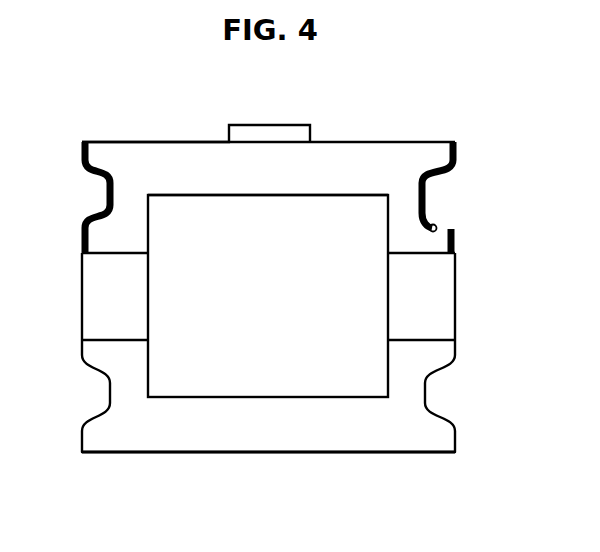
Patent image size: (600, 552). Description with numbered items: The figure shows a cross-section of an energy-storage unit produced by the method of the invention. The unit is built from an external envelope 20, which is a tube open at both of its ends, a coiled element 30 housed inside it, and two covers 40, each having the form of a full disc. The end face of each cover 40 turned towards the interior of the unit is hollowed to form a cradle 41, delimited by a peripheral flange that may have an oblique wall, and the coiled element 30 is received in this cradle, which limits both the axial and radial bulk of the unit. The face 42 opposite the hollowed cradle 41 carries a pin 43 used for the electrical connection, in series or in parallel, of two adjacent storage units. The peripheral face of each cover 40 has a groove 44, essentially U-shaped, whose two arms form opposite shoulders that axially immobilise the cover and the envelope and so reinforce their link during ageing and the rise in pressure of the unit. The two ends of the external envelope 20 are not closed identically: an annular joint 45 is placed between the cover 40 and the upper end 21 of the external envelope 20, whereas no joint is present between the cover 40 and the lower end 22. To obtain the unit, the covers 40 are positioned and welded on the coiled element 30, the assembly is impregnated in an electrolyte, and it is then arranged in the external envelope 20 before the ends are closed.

The external envelope 20 is at (455, 308).
The upper end of the external envelope 21 is at (458, 142).
The lower end of the external envelope 22 is at (82, 452).
The coiled element 30 is at (352, 288).
The cover 40 is at (345, 160).
The cradle 41 is at (218, 195).
The face opposite the hollowed face 42 is at (150, 142).
The pin 43 is at (267, 137).
The groove 44 is at (437, 232).
The annular joint 45 is at (82, 142).